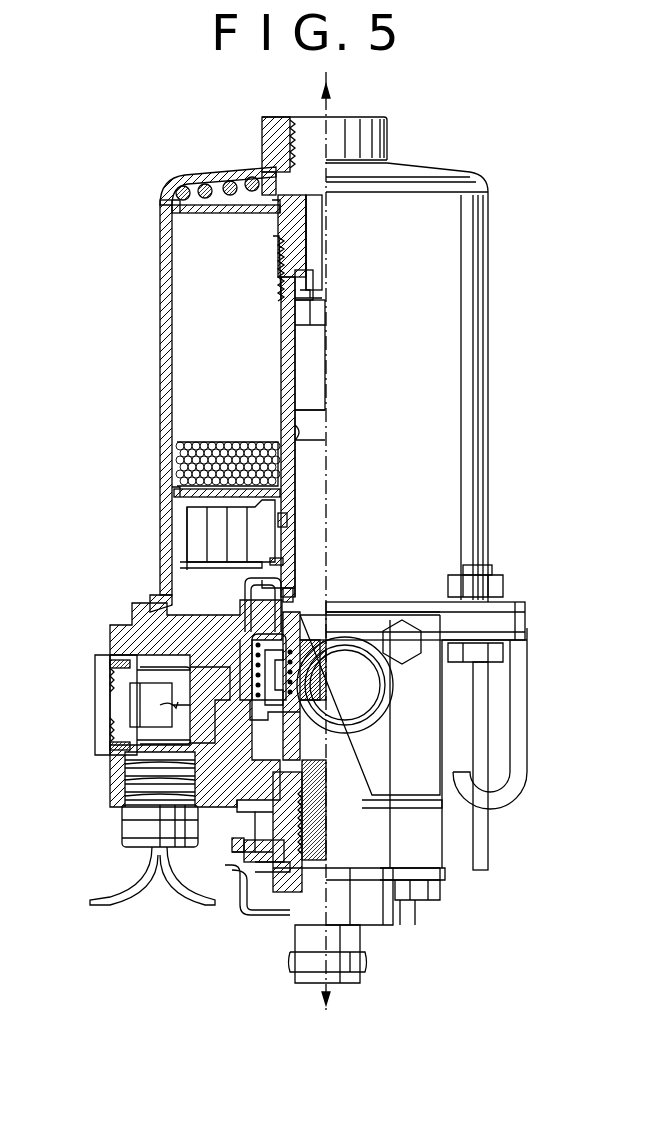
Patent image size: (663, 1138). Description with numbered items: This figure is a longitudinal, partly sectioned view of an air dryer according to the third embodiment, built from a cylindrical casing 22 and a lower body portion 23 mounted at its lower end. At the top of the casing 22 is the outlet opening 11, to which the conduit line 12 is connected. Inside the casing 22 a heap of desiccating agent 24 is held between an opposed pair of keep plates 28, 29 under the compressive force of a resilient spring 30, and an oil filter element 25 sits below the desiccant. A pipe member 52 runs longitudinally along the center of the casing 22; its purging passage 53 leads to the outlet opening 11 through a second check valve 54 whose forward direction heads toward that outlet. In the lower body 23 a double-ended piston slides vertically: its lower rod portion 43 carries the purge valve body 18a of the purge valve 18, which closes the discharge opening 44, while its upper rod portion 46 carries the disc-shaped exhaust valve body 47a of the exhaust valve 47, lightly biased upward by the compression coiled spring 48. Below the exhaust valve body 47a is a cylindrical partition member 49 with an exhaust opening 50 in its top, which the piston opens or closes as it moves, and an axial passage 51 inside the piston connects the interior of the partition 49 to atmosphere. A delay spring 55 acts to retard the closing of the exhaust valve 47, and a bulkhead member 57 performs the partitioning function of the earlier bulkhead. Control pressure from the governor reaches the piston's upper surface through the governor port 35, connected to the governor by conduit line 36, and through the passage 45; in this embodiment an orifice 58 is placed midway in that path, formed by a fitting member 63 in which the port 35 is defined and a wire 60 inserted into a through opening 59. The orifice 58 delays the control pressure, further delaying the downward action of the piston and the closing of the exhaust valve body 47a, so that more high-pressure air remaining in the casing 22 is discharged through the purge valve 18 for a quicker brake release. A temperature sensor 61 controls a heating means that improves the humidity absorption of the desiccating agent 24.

The outlet opening 11 is at (292, 135).
The passage or conduit line 12 is at (327, 120).
The purge valve 18 is at (287, 893).
The purge valve body 18a is at (290, 895).
The cylindrical casing 22 is at (480, 515).
The lower body portion 23 is at (428, 843).
The desiccating agent 24 is at (178, 462).
The oil filter element 25 is at (192, 546).
The keep plate 28 is at (176, 210).
The keep plate 29 is at (178, 494).
The resilient spring 30 is at (170, 190).
The governor port 35 is at (104, 727).
The passage or conduit line 36 is at (103, 705).
The lower rod portion 43 is at (234, 860).
The discharge opening 44 is at (257, 892).
The passage 45 is at (254, 747).
The upper rod portion 46 is at (292, 655).
The exhaust valve 47 is at (312, 615).
The exhaust valve body 47a is at (262, 592).
The compression coiled spring 48 is at (262, 630).
The cylindrical partition member 49 is at (320, 700).
The exhaust opening 50 is at (352, 693).
The passage for exhaust air 51 is at (342, 852).
The pipe member 52 is at (284, 342).
The purging passage 53 is at (297, 430).
The second check valve 54 is at (300, 298).
The delay spring 55 is at (290, 705).
The bulkhead member 57 is at (280, 585).
The orifice 58 is at (148, 732).
The through opening 59 is at (198, 688).
The wire 60 is at (165, 700).
The temperature sensor 61 is at (122, 840).
The fitting member 63 is at (118, 660).